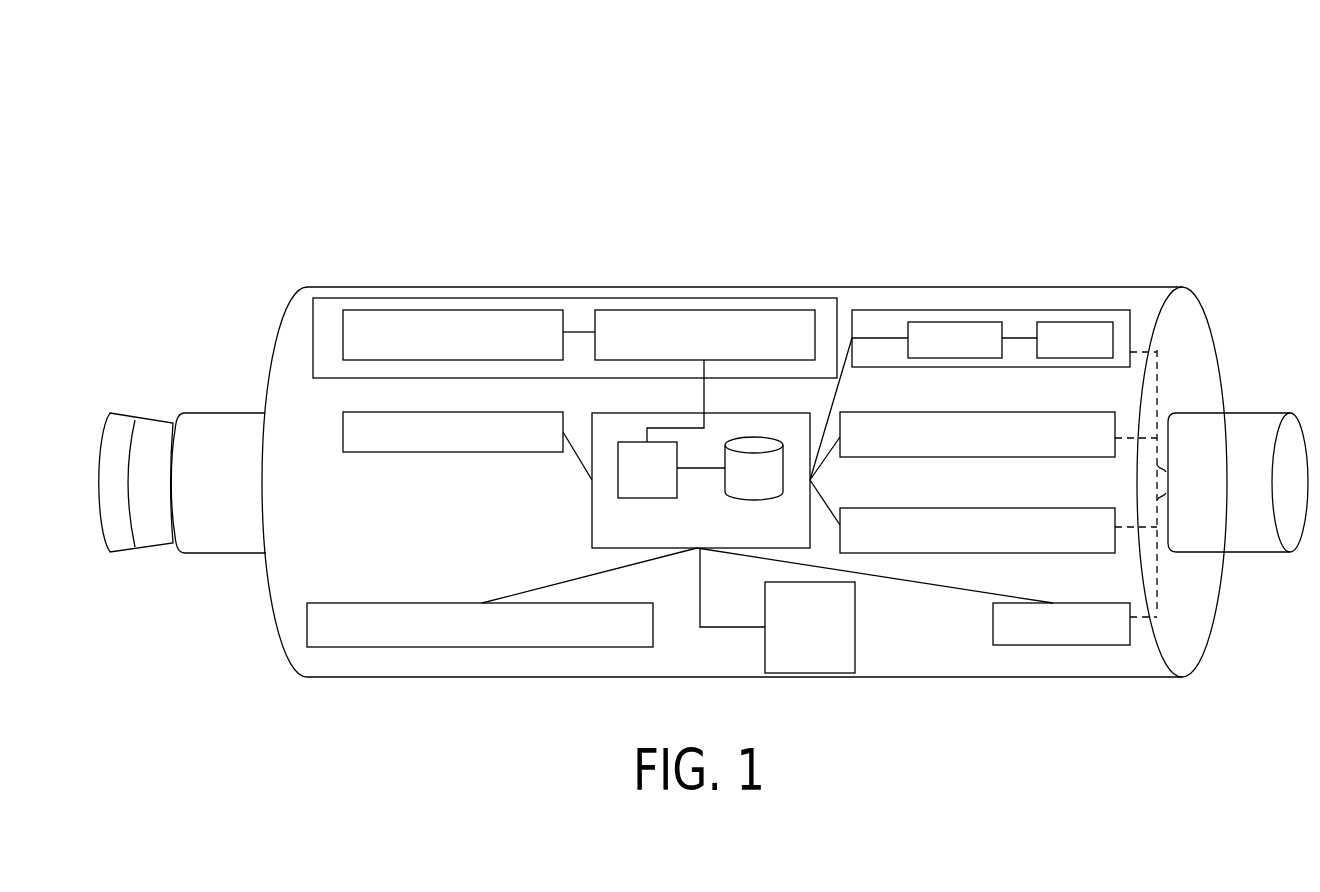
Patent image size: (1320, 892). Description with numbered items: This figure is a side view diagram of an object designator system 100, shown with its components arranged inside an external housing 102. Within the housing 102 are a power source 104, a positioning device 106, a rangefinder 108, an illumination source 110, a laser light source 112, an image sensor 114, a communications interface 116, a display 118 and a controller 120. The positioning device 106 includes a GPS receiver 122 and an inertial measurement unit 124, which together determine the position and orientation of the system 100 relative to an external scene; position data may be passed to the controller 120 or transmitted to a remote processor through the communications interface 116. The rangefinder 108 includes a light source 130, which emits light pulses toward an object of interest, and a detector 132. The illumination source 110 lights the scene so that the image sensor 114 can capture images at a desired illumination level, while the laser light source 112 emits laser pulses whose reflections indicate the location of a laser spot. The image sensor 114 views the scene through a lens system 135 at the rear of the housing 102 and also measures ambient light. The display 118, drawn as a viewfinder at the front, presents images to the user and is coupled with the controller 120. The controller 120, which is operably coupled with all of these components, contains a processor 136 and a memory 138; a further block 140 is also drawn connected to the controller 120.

The object designator system 100 is at (243, 138).
The external housing 102 is at (372, 277).
The power source 104 is at (475, 446).
The positioning device 106 is at (313, 306).
The rangefinder 108 is at (1090, 310).
The illumination source 110 is at (1003, 443).
The laser light source 112 is at (1003, 540).
The image sensor 114 is at (1084, 638).
The communications interface 116 is at (503, 635).
The display 118 is at (208, 413).
The controller 120 is at (592, 511).
The GPS receiver 122 is at (540, 348).
The inertial measurement unit 124 is at (790, 348).
The light source 130 is at (976, 351).
The detector 132 is at (1096, 351).
The lens system 135 is at (1237, 413).
The processor 136 is at (670, 485).
The memory 138 is at (776, 485).
The input/output port 140 is at (833, 641).